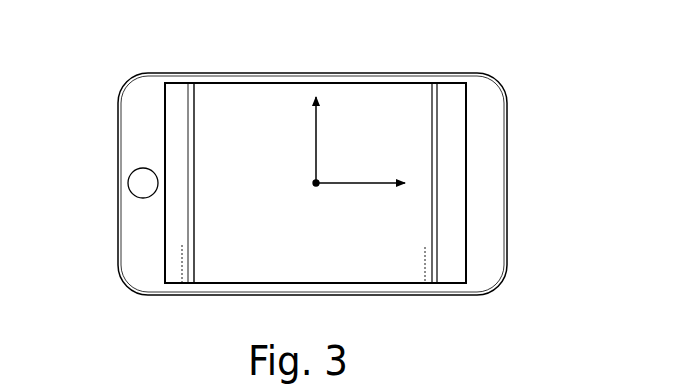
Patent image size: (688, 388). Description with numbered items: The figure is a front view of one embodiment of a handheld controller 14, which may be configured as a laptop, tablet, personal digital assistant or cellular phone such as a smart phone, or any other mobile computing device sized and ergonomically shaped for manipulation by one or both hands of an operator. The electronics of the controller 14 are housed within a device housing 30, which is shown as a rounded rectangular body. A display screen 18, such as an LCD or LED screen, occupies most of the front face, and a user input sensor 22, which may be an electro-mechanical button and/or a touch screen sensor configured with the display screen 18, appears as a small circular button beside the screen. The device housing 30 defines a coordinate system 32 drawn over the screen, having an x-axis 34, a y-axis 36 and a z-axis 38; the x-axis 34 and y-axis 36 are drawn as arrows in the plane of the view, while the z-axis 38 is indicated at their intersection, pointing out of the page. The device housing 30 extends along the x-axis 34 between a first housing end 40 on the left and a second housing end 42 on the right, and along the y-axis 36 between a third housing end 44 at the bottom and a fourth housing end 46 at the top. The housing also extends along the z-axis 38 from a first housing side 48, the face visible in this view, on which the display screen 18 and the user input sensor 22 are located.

The controller 14 is at (494, 66).
The display screen 18 is at (196, 83).
The user input sensor 22 is at (129, 190).
The device housing 30 is at (507, 150).
The coordinate system 32 is at (352, 149).
The x-axis 34 is at (354, 185).
The y-axis 36 is at (312, 145).
The z-axis 38 is at (314, 186).
The first housing end 40 is at (118, 228).
The second housing end 42 is at (507, 232).
The third housing end 44 is at (210, 296).
The fourth housing end 46 is at (268, 73).
The first housing side 48 is at (138, 280).